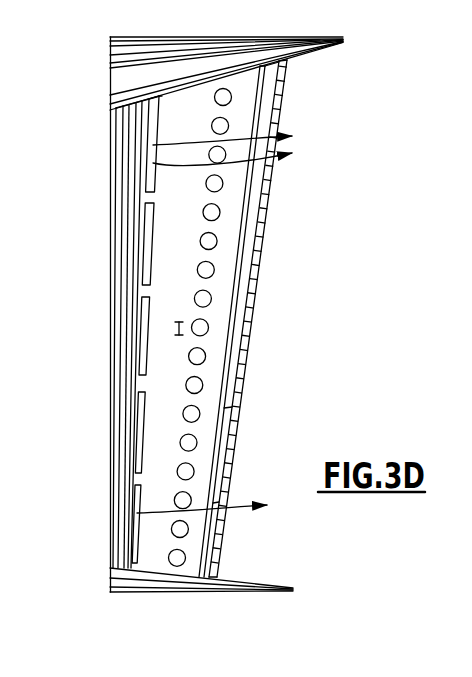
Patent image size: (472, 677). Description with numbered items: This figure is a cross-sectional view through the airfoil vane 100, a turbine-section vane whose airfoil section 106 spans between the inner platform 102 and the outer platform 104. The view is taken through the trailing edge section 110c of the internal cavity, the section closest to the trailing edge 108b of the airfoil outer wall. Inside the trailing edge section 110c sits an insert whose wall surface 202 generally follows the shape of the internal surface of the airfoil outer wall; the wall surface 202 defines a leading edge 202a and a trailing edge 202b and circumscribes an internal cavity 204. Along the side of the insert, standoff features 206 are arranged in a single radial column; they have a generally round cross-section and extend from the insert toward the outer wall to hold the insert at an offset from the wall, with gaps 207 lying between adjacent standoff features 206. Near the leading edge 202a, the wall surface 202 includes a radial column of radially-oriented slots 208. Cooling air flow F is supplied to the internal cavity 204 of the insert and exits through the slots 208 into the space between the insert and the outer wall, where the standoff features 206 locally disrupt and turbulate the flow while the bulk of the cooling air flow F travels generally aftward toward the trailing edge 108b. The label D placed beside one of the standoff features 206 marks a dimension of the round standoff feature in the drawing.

The airfoil vane 100 is at (205, 326).
The inner platform 102 is at (267, 592).
The outer platform 104 is at (332, 37).
The airfoil section 106 is at (282, 92).
The trailing edge 108b is at (271, 195).
The trailing edge section 110c is at (203, 80).
The wall surface 202 is at (173, 272).
The leading edge 202a is at (130, 382).
The trailing edge 202b is at (254, 331).
The internal cavity 204 is at (173, 98).
The standoff features 206 is at (214, 272).
The gaps 207 is at (200, 257).
The slots 208 is at (147, 240).
The cooling air flow F is at (223, 317).
The hole diameter D is at (171, 328).